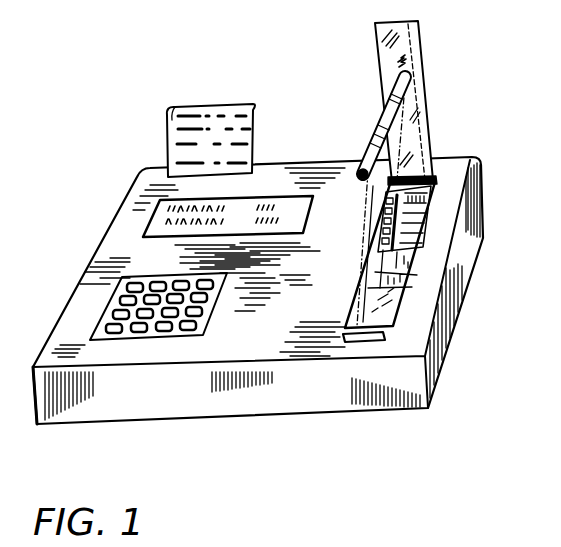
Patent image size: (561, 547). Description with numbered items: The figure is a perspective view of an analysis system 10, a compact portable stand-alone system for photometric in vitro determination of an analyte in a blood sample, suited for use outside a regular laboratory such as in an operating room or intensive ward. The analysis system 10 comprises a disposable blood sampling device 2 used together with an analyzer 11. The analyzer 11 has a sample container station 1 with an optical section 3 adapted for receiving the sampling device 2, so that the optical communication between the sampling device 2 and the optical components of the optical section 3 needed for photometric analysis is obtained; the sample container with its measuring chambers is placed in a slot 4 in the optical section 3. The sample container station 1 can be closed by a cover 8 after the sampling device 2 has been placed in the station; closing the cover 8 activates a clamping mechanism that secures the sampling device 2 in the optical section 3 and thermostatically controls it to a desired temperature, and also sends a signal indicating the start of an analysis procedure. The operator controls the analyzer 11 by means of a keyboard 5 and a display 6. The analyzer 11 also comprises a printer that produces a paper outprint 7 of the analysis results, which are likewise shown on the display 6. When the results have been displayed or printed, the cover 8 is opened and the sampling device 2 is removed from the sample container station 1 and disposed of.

The sample container station 1 is at (390, 307).
The blood sampling device 2 is at (369, 145).
The optical section 3 is at (413, 275).
The slot 4 is at (412, 248).
The keyboard 5 is at (110, 297).
The display 6 is at (163, 211).
The outprint 7 is at (189, 108).
The cover 8 is at (410, 50).
The analysis system 10 is at (493, 193).
The analyzer 11 is at (371, 410).